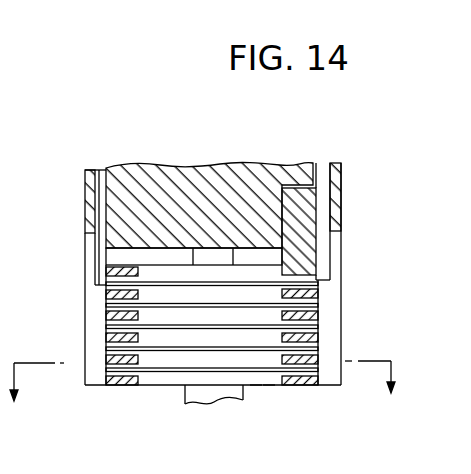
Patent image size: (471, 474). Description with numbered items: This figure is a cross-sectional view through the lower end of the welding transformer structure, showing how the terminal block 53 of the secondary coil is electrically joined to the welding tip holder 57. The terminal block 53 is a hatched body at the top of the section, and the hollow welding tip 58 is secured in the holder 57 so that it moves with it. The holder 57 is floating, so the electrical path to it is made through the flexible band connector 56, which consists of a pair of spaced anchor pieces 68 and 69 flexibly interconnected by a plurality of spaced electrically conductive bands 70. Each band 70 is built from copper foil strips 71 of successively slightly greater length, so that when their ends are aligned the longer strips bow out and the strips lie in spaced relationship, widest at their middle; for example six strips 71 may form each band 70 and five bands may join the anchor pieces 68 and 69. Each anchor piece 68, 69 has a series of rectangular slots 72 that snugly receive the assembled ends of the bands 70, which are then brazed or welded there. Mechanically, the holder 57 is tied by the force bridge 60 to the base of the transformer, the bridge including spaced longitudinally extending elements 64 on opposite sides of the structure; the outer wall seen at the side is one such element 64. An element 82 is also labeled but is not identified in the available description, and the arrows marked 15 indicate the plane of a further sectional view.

The section line 15- 15 is at (202, 402).
The terminal block 53 is at (215, 165).
The flexible band connector 56 is at (268, 386).
The welding tip holder 57 is at (255, 386).
The hollow welding tip 58 is at (185, 402).
The force bridge 60 is at (342, 308).
The longitudinally extending elements 64 is at (85, 237).
The anchor piece 68 is at (330, 239).
The anchor piece 69 is at (106, 315).
The electrically conductive band 70 is at (307, 328).
The copper foil strip 71 is at (106, 333).
The slot 72 is at (307, 293).
The seal strip 82 is at (220, 258).